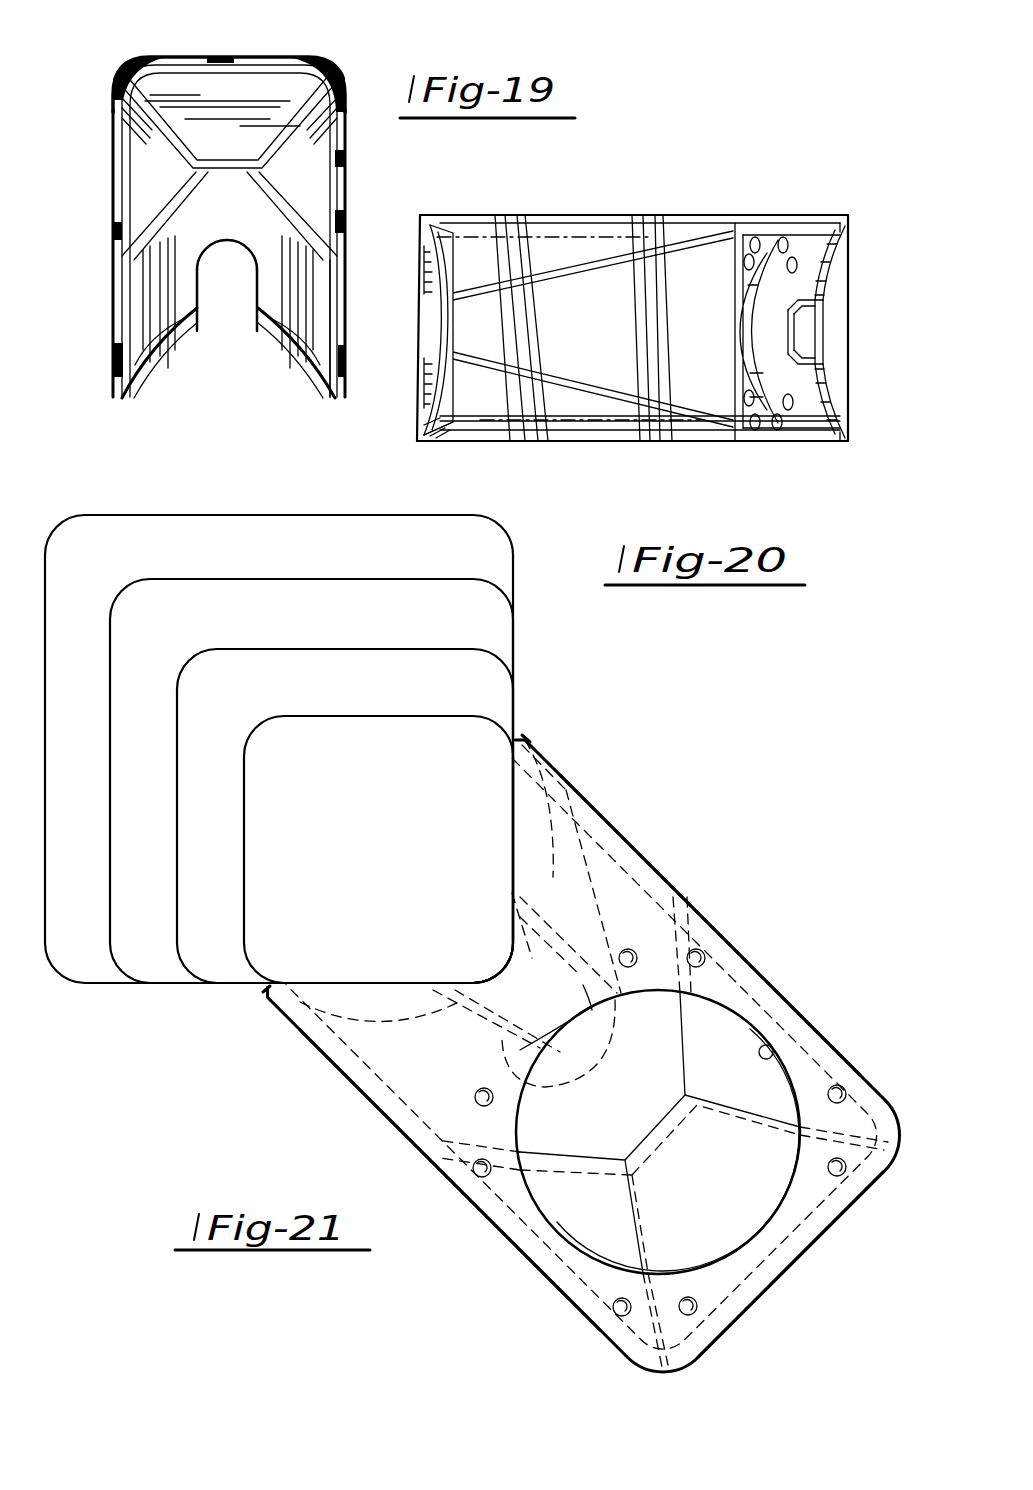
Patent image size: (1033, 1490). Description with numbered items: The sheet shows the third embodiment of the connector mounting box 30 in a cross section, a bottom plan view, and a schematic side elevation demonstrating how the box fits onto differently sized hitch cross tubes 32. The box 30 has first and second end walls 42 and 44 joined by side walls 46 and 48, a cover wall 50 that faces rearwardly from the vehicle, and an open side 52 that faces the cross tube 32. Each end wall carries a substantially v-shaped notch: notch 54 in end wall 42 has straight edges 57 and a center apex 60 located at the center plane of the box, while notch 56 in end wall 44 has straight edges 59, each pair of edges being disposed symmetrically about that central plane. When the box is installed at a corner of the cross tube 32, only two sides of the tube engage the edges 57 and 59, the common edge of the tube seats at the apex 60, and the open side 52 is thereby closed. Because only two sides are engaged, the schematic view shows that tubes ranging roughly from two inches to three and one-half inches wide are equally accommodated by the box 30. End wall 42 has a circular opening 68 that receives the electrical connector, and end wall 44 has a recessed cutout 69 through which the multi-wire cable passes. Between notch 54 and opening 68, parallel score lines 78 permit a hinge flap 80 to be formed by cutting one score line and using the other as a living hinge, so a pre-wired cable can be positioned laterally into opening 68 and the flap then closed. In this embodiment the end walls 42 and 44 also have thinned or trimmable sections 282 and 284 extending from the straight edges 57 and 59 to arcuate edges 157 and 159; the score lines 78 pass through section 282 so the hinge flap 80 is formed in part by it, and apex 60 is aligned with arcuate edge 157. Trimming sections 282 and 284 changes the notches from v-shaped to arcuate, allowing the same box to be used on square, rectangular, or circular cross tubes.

In FIG. 21, the mounting box 30 is at (718, 902).
In FIG. 21, the cross tube 32 is at (92, 515).
In FIG. 20, the first end wall 42 is at (760, 443).
In FIG. 19, the second end wall 44 is at (333, 316).
In FIG. 20, the second end wall 44 is at (452, 441).
In FIG. 19, the side wall 46 is at (113, 196).
In FIG. 20, the side wall 46 is at (620, 441).
In FIG. 21, the side wall 46 is at (446, 1193).
In FIG. 19, the side wall 48 is at (349, 182).
In FIG. 20, the side wall 48 is at (735, 188).
In FIG. 21, the side wall 48 is at (769, 978).
In FIG. 19, the cover wall 50 is at (232, 57).
In FIG. 21, the cover wall 50 is at (795, 1262).
In FIG. 19, the open side 52 is at (226, 405).
In FIG. 20, the open side 52 is at (500, 441).
In FIG. 21, the notch 54 is at (512, 836).
In FIG. 19, the notch 56 is at (303, 402).
In FIG. 20, the straight edges 57 is at (849, 241).
In FIG. 21, the straight edges 57 is at (380, 983).
In FIG. 19, the straight edges 59 is at (158, 384).
In FIG. 20, the center apex 60 is at (824, 334).
In FIG. 21, the center apex 60 is at (514, 953).
In FIG. 21, the circular opening 68 is at (801, 1050).
In FIG. 19, the recessed cutout 69 is at (226, 241).
In FIG. 20, the recessed cutout 69 is at (431, 340).
In FIG. 20, the score lines 78 is at (820, 307).
In FIG. 21, the score lines 78 is at (578, 1062).
In FIG. 21, the hinge flap 80 is at (560, 1025).
In FIG. 20, the arcuate edge 157 is at (796, 425).
In FIG. 21, the arcuate edge 157 is at (552, 890).
In FIG. 19, the arcuate edge 159 is at (257, 276).
In FIG. 20, the trimmable section 282 is at (838, 265).
In FIG. 21, the trimmable section 282 is at (548, 800).
In FIG. 19, the trimmable section 284 is at (273, 333).
In FIG. 20, the trimmable section 284 is at (421, 244).